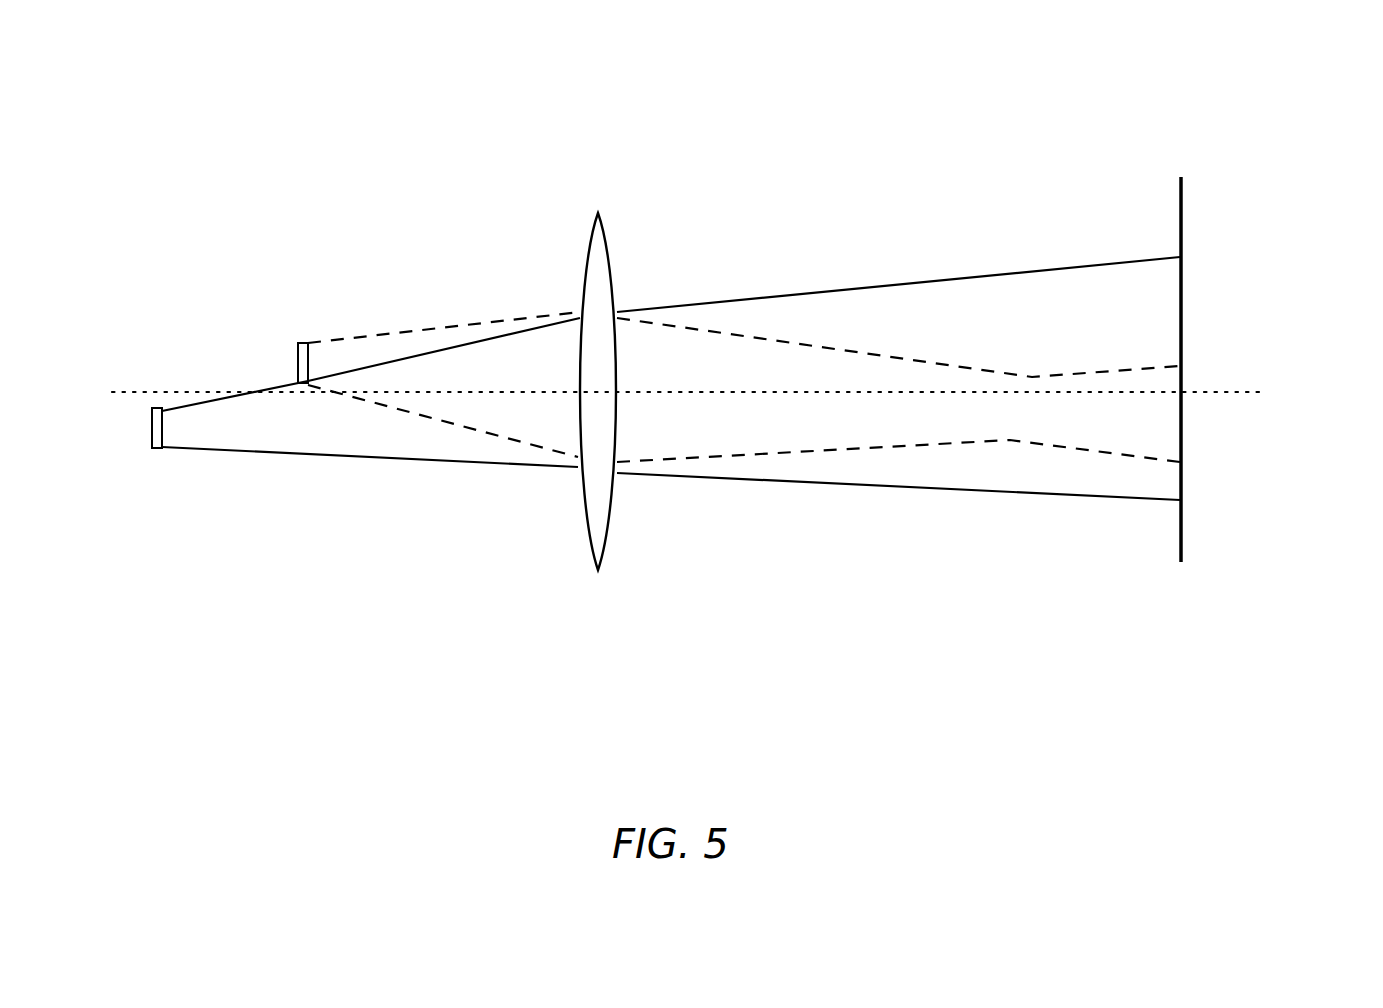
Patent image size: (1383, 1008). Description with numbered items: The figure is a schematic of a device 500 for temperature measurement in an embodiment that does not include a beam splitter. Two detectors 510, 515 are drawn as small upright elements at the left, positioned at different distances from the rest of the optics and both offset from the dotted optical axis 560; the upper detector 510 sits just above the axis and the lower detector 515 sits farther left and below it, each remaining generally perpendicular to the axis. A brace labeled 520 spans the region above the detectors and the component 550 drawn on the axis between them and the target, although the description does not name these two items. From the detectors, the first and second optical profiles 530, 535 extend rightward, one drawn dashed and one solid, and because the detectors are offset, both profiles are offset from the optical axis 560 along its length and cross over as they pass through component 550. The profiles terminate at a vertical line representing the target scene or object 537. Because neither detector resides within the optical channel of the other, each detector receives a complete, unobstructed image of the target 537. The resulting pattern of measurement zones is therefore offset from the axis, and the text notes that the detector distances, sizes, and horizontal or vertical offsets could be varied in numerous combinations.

The device 500 is at (595, 667).
The first detector 510 is at (296, 346).
The second detector 515 is at (152, 430).
The light source assembly 520 is at (318, 177).
The first optical profile 530 is at (846, 452).
The second optical profile 535 is at (812, 291).
The target scene or object 537 is at (1182, 193).
The lens 550 is at (612, 233).
The optical axis 560 is at (1237, 398).